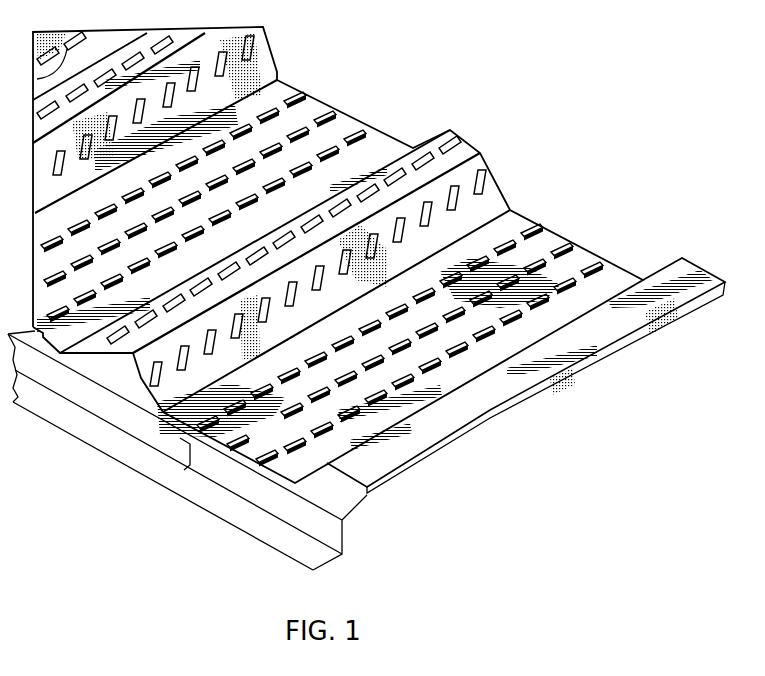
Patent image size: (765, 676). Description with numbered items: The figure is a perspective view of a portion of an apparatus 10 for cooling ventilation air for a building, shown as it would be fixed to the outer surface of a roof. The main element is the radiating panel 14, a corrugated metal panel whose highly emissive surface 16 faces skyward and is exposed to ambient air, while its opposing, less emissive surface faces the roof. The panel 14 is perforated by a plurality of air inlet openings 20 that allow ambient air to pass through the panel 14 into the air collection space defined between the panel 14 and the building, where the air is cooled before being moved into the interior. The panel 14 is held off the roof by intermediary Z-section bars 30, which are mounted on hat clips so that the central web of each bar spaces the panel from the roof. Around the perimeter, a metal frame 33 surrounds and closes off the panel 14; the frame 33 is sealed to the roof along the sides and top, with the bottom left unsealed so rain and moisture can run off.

The apparatus for cooling ventilation air 10 is at (637, 65).
The radiating panel 14 is at (365, 128).
The emissive surface 16 is at (492, 218).
The air inlet openings 20 is at (591, 264).
The Z-section bars 30 is at (317, 523).
The metal frame 33 is at (479, 399).